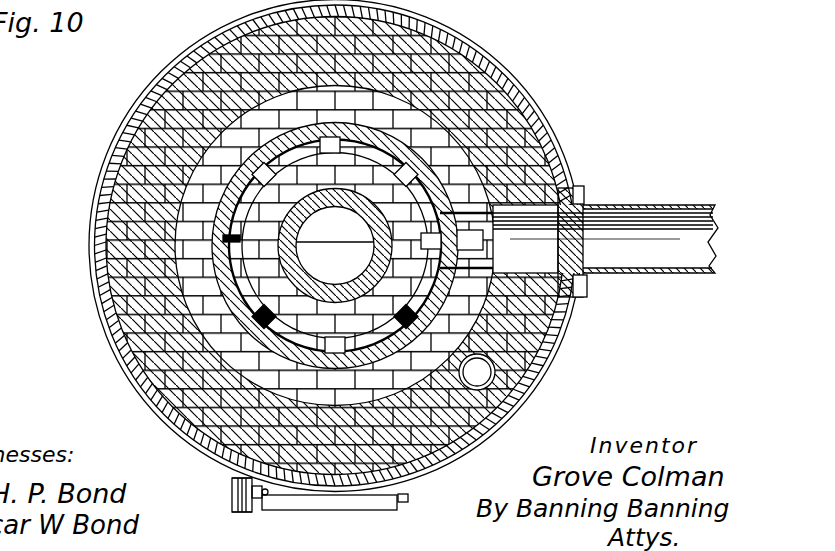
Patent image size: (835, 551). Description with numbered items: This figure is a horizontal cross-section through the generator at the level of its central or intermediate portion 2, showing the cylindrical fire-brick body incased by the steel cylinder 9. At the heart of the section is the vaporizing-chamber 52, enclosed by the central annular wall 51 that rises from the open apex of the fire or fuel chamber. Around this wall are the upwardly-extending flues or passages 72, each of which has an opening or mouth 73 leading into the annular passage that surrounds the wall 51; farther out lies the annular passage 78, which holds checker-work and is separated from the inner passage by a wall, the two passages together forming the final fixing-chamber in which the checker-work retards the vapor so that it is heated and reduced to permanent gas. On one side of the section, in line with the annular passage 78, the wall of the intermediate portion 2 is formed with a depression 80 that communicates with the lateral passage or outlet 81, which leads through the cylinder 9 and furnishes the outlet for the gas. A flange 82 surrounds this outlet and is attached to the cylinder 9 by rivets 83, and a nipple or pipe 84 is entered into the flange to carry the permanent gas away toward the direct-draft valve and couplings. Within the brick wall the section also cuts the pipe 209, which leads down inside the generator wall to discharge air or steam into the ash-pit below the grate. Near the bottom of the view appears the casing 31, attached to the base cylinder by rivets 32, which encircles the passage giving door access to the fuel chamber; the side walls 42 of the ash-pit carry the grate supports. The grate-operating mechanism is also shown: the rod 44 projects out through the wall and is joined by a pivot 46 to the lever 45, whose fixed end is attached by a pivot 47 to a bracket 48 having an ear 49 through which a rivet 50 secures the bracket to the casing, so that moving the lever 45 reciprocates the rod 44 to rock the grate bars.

The central or intermediate portion 2 is at (505, 130).
The cylinder 9 is at (505, 90).
The casing 31 is at (385, 504).
The rivets 32 is at (406, 498).
The side walls of the ash-pit 42 is at (335, 246).
The rod 44 is at (232, 490).
The lever 45 is at (240, 512).
The pivot 46 is at (232, 503).
The pivot 47 is at (262, 498).
The bracket 48 is at (250, 512).
The ear 49 is at (420, 167).
The rivet 50 is at (266, 495).
The central annular wall 51 is at (335, 235).
The vaporizing-chamber 52 is at (335, 246).
The upwardly-extending flue or passage 72 is at (332, 245).
The opening or mouth 73 is at (335, 246).
The annular passage 78 is at (460, 182).
The depression 80 is at (466, 240).
The lateral passage or outlet 81 is at (603, 239).
The flange 82 is at (583, 205).
The rivets 83 is at (579, 190).
The nipple or pipe 84 is at (650, 239).
The pipe 209 is at (480, 374).